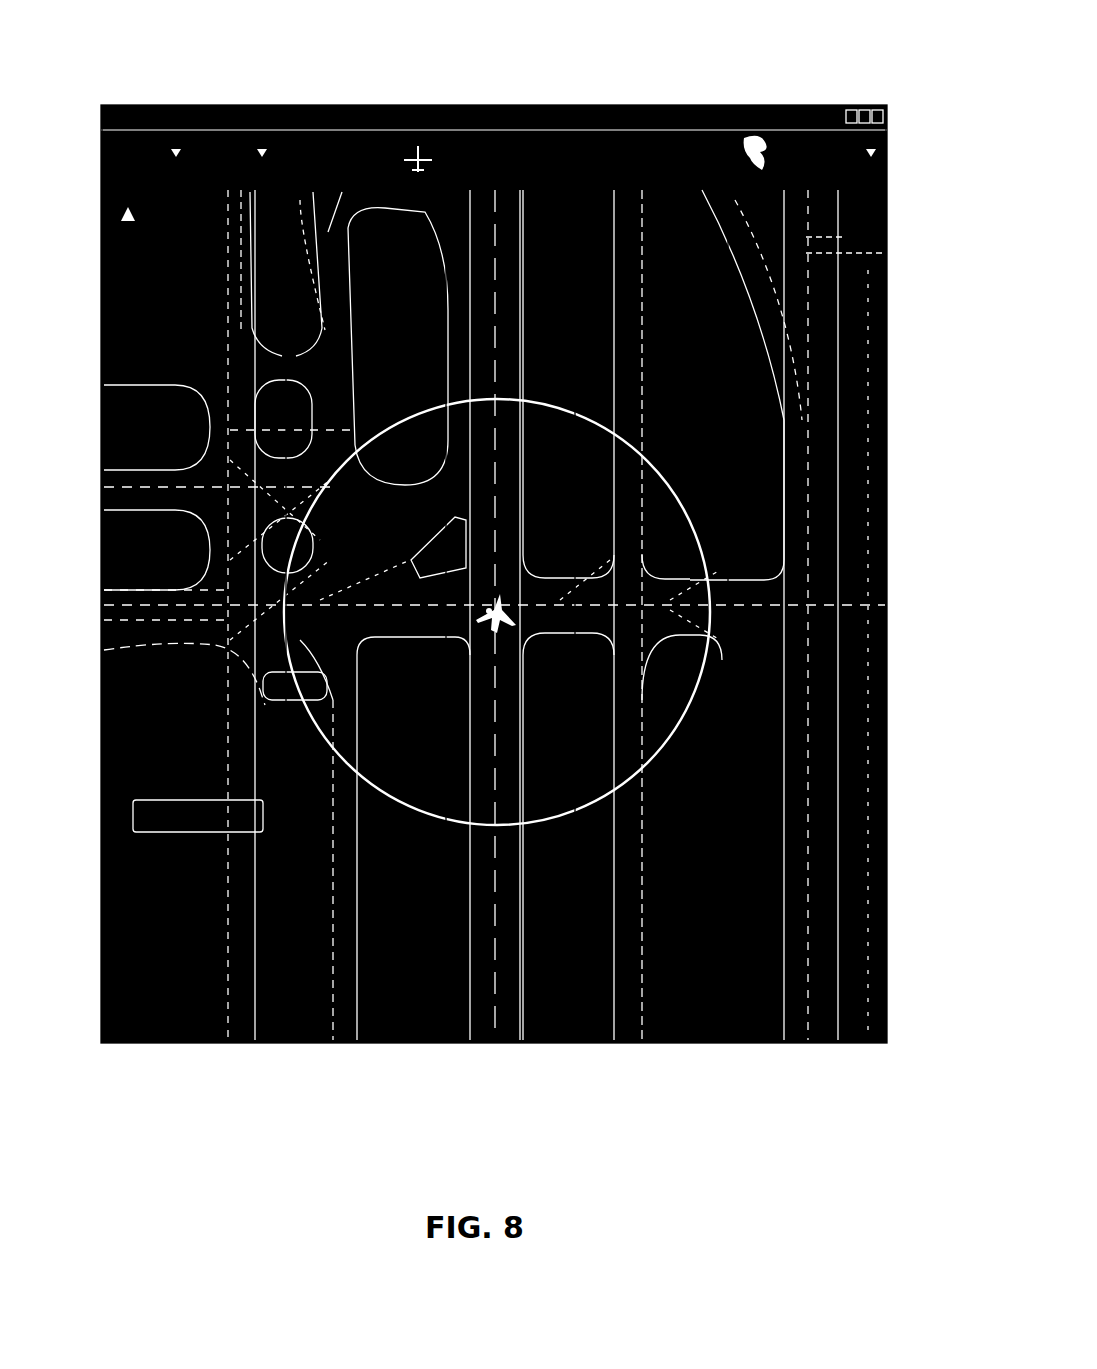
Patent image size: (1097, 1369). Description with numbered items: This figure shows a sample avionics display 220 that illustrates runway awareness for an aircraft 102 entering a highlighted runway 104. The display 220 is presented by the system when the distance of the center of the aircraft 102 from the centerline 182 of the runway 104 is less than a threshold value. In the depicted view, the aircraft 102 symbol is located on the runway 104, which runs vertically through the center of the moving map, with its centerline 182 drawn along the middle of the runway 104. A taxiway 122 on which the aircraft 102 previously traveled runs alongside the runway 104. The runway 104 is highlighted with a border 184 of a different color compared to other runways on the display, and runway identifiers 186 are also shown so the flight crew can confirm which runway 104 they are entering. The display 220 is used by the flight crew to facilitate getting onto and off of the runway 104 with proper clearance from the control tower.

The sample avionics display 220 is at (690, 36).
The aircraft 102 is at (888, 484).
The runway 104 is at (888, 803).
The runway identifiers 186 is at (102, 913).
The taxiway 122 is at (286, 1044).
The centerline 182 is at (446, 1044).
The border 184 is at (728, 1044).